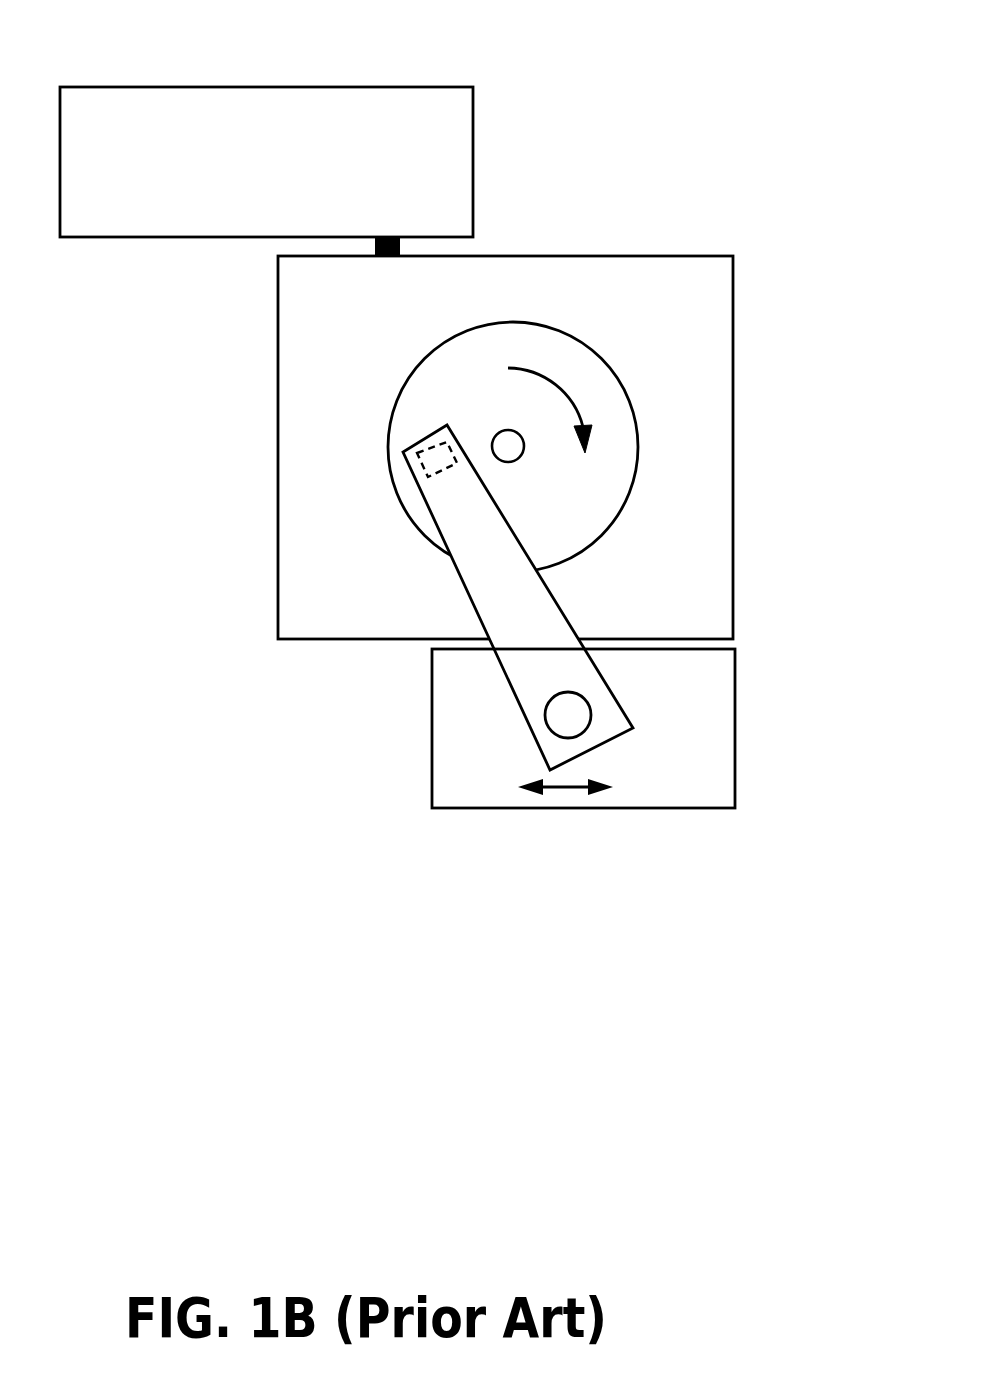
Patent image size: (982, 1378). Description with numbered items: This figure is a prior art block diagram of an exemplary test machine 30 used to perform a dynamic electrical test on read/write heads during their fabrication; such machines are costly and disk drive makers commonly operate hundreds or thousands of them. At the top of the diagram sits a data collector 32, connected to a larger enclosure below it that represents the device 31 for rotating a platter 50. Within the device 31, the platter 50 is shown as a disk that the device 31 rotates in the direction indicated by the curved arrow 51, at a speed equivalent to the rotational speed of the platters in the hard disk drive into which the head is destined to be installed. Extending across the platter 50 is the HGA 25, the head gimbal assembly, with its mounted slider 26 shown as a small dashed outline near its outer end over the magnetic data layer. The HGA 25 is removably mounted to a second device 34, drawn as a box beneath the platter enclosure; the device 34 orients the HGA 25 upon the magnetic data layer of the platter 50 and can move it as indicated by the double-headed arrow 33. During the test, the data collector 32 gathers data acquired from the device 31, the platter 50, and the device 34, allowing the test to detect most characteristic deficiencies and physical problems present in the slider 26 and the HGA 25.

The test machine 30 is at (380, 28).
The data collector 32 is at (284, 174).
The device for rotating a platter 31 is at (688, 278).
The platter 50 is at (597, 478).
The arrow 51 is at (570, 400).
The HGA 25 is at (457, 508).
The slider 26 is at (430, 465).
The device 34 is at (712, 702).
The arrow 33 is at (560, 787).